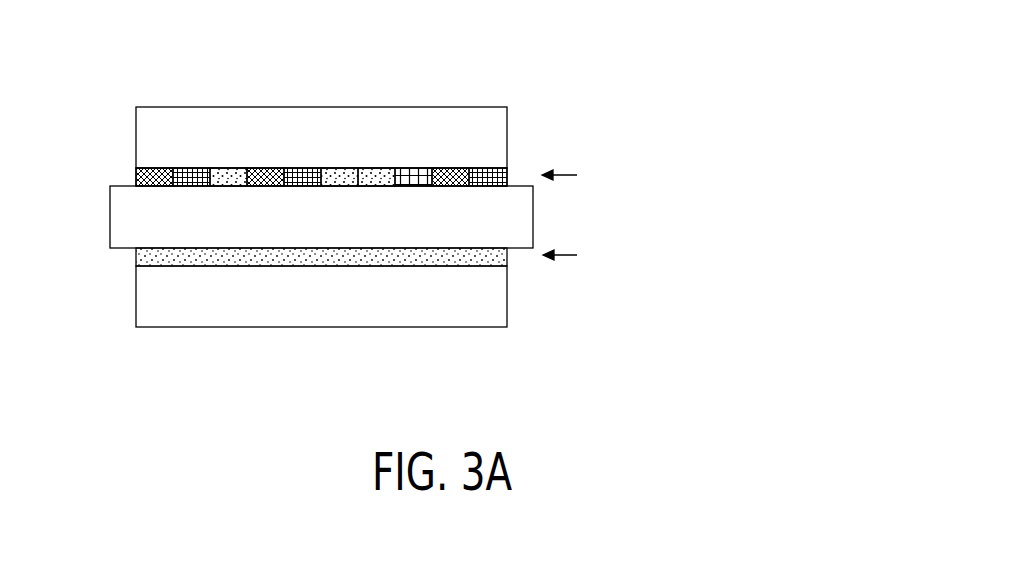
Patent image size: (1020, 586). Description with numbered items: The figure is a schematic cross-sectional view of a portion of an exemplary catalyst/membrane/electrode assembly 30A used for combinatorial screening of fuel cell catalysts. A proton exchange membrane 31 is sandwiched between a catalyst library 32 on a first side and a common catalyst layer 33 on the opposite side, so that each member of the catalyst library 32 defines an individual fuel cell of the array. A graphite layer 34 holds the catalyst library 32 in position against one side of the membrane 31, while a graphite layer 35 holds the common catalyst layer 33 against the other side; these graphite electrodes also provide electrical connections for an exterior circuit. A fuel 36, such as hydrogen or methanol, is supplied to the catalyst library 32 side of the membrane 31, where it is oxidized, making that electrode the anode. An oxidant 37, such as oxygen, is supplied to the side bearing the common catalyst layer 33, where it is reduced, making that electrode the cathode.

The catalyst/membrane/electrode assembly 30A is at (443, 215).
The proton exchange membrane 31 is at (110, 215).
The catalyst library 32 is at (136, 178).
The common catalyst layer 33 is at (136, 258).
The graphite layer 34 is at (136, 142).
The graphite layer 35 is at (136, 300).
The fuel 36 is at (330, 72).
The oxidant 37 is at (316, 362).